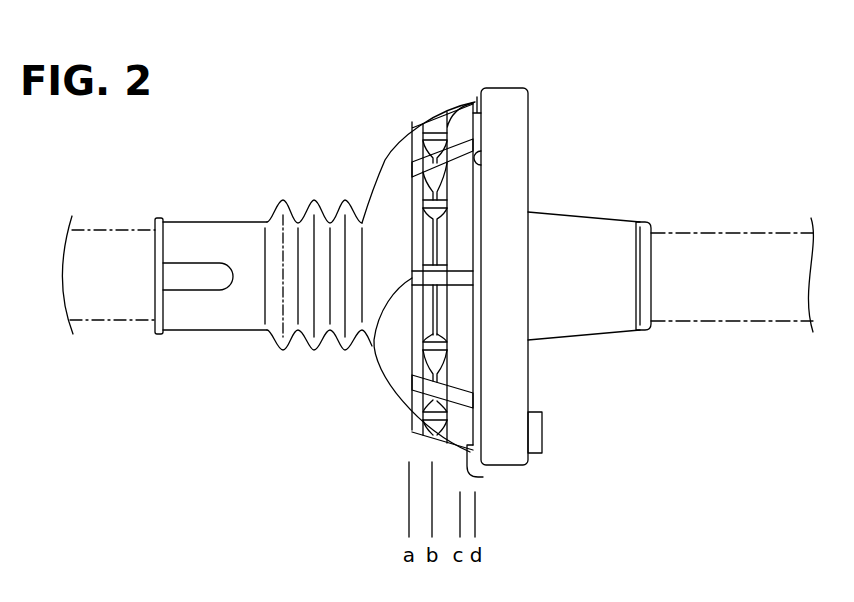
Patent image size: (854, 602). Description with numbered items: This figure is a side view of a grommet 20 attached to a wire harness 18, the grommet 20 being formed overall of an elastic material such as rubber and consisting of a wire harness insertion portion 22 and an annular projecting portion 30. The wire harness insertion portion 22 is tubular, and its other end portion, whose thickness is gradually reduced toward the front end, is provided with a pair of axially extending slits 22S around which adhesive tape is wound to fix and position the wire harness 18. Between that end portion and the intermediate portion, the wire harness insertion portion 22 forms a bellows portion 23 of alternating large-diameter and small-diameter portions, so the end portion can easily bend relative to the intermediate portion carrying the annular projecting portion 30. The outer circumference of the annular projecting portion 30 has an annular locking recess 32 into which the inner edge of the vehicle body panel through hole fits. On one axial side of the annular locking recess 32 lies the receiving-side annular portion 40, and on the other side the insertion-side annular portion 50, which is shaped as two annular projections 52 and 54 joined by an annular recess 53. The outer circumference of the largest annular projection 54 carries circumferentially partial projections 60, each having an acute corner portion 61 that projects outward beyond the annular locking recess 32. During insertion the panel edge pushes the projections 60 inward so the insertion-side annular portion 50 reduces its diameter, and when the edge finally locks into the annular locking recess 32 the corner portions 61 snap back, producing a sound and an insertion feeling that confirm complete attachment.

The wire harness 18 is at (726, 233).
The grommet 20 is at (562, 106).
The wire harness insertion portion 22 is at (600, 212).
The slits 22S is at (200, 264).
The bellows portion 23 is at (287, 200).
The annular projecting portion 30 is at (514, 80).
The annular locking recess 32 is at (487, 159).
The receiving-side annular portion 40 is at (592, 322).
The insertion-side annular portion 50 is at (394, 133).
The annular projection 52 is at (417, 123).
The annular recess 53 is at (430, 127).
The largest annular projection 54 is at (458, 100).
The projections 60 is at (448, 118).
The corner portion 61 is at (476, 100).